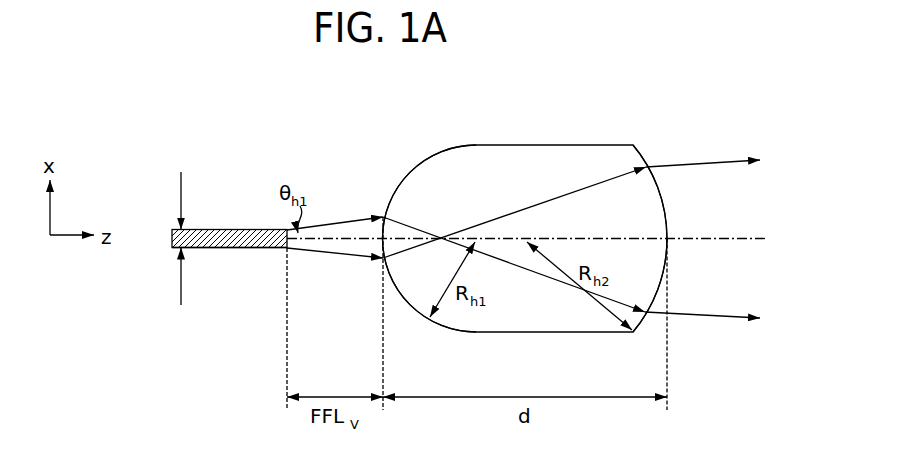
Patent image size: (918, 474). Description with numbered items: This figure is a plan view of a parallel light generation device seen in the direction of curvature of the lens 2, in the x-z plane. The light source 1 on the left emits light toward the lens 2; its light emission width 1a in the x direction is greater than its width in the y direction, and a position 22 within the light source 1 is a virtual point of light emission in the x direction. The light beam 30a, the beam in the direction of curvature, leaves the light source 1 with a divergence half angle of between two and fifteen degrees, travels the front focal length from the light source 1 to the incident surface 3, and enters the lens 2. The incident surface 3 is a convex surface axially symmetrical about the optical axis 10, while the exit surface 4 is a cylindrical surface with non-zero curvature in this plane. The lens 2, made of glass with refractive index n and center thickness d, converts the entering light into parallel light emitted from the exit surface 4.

The light source 1 is at (237, 230).
The light emission width 1a is at (165, 238).
The lens 2 is at (531, 145).
The incident surface 3 is at (410, 172).
The exit surface 4 is at (661, 196).
The optical axis 10 is at (745, 238).
The position 22 is at (209, 248).
The light beam 30a is at (343, 222).